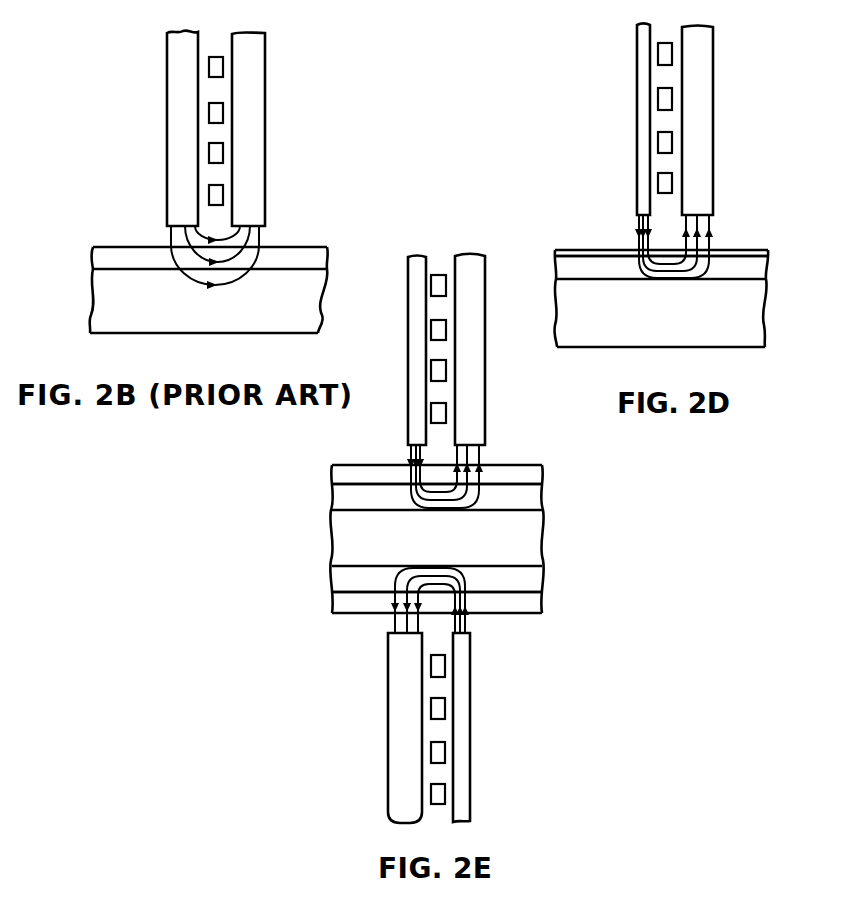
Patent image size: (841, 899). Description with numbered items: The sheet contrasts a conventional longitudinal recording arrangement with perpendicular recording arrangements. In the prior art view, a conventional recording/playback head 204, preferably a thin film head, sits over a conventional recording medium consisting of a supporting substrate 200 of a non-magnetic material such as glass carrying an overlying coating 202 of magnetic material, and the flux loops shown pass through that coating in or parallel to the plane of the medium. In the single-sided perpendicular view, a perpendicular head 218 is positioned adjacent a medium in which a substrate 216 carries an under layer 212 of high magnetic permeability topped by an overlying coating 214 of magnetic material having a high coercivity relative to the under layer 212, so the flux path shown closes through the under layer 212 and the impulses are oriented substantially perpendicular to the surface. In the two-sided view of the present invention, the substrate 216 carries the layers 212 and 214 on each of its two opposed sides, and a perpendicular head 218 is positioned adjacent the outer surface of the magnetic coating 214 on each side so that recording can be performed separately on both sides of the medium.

In FIG. 2B, the supporting substrate 200 is at (103, 322).
In FIG. 2B, the overlying coating 202 is at (132, 255).
In FIG. 2B, the recording/playback head 204 is at (166, 124).
In FIG. 2D, the under layer 212 is at (565, 268).
In FIG. 2E, the under layer 212 is at (532, 500).
In FIG. 2D, the overlying coating of magnetic material 214 is at (580, 250).
In FIG. 2E, the overlying coating of magnetic material 214 is at (537, 477).
In FIG. 2D, the substrate 216 is at (635, 332).
In FIG. 2E, the substrate 216 is at (540, 542).
In FIG. 2D, the perpendicular head 218 is at (714, 147).
In FIG. 2E, the perpendicular head 218 is at (492, 381).